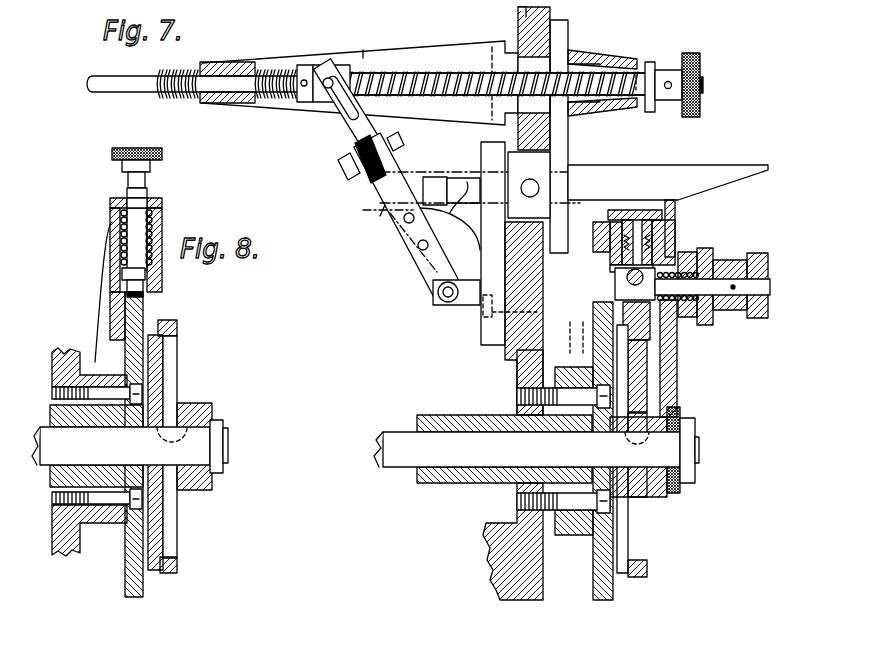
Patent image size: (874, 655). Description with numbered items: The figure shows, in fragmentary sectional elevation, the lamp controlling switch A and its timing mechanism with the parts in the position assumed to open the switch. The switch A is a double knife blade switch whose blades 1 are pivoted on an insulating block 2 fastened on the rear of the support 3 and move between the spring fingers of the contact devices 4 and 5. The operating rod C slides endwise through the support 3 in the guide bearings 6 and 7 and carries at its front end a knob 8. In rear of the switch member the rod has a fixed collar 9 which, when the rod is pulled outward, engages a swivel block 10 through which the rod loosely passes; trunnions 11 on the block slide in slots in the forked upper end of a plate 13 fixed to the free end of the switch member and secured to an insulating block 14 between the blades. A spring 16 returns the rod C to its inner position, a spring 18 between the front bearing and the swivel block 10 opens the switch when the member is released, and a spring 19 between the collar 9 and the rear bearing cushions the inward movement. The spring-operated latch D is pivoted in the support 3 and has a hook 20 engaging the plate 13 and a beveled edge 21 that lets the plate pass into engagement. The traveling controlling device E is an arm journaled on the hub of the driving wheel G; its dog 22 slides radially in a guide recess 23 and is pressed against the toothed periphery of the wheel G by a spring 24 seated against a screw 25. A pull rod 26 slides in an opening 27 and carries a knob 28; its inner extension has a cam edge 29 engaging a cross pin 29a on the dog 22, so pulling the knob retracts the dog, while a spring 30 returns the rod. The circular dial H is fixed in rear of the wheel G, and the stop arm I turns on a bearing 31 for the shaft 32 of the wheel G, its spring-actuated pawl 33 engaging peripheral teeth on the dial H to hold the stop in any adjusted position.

In FIG. 7, the blades 1 is at (374, 190).
In FIG. 7, the insulating block 2 is at (515, 278).
In FIG. 7, the support 3 is at (519, 13).
In FIG. 8, the contact device 4 is at (125, 190).
In FIG. 7, the contact device 5 is at (456, 178).
In FIG. 7, the guide bearing 6 is at (592, 58).
In FIG. 7, the guide bearing 7 is at (361, 41).
In FIG. 7, the knob 8 is at (702, 61).
In FIG. 7, the fixed collar 9 is at (302, 66).
In FIG. 7, the swivel block 10 is at (322, 65).
In FIG. 7, the trunnions 11 is at (323, 97).
In FIG. 7, the plate 13 is at (342, 130).
In FIG. 7, the insulating block 14 is at (357, 183).
In FIG. 7, the spring 16 is at (181, 72).
In FIG. 7, the spring 18 is at (459, 72).
In FIG. 7, the spring 19 is at (270, 100).
In FIG. 7, the hook 20 is at (428, 177).
In FIG. 7, the beveled edge 21 is at (380, 216).
In FIG. 7, the dog 22 is at (648, 320).
In FIG. 7, the guide recess 23 is at (618, 268).
In FIG. 7, the spring 24 is at (607, 258).
In FIG. 7, the screw 25 is at (630, 216).
In FIG. 7, the pull rod 26 is at (767, 283).
In FIG. 7, the opening 27 is at (692, 252).
In FIG. 7, the knob 28 is at (760, 254).
In FIG. 7, the cam edge 29 is at (622, 298).
In FIG. 7, the cross pin 29a is at (627, 282).
In FIG. 7, the spring 30 is at (713, 262).
In FIG. 7, the bearing 31 is at (577, 522).
In FIG. 8, the bearing 31 is at (110, 520).
In FIG. 7, the shaft 32 is at (536, 450).
In FIG. 8, the shaft 32 is at (130, 446).
In FIG. 8, the pawl 33 is at (140, 293).
In FIG. 7, the lamp controlling switch A is at (417, 219).
In FIG. 7, the operating rod C is at (396, 80).
In FIG. 7, the latch D is at (668, 182).
In FIG. 7, the controlling device E is at (682, 291).
In FIG. 7, the driving wheel G is at (629, 553).
In FIG. 8, the driving wheel G is at (170, 347).
In FIG. 7, the dial H is at (603, 593).
In FIG. 8, the dial H is at (130, 570).
In FIG. 7, the stop arm I is at (572, 354).
In FIG. 8, the stop arm I is at (110, 252).